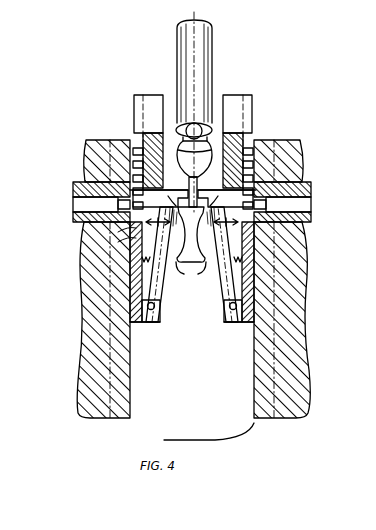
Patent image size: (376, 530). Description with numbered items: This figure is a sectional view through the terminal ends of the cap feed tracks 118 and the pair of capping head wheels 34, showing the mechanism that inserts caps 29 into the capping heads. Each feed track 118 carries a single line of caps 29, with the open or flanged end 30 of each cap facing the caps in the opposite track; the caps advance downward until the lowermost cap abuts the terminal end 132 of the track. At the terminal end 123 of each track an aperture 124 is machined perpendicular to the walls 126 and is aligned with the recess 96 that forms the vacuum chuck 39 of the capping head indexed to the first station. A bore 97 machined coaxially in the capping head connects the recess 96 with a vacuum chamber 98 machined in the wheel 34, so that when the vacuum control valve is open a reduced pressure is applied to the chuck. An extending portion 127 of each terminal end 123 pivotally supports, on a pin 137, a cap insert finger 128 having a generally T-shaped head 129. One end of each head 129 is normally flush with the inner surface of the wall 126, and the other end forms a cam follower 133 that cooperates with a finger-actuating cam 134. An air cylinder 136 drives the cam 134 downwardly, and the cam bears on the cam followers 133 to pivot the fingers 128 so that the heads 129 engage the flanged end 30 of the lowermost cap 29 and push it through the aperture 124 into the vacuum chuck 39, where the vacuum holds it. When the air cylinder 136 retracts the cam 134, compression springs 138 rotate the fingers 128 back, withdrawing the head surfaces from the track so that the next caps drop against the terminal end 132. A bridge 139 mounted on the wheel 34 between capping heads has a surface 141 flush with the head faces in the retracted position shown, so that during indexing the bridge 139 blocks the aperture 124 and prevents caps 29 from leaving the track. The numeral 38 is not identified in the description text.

The indexing wheel 34 is at (90, 139).
The vacuum chuck 39 is at (90, 180).
The vacuum chamber 98 is at (73, 204).
The bore 97 is at (266, 204).
The recess 96 is at (130, 214).
The terminal end of feed track 132 is at (253, 222).
The cap 29 is at (134, 146).
The feed track 118 is at (133, 106).
The terminal end 123 is at (166, 132).
The gripping device 38 is at (258, 90).
The flanged end 30 is at (193, 194).
The air cylinder 136 is at (213, 44).
The finger-actuating cam 134 is at (191, 137).
The cam follower 133 is at (191, 234).
The T-shaped head 129 is at (191, 267).
The cap insert finger 128 is at (221, 289).
The pin 137 is at (228, 323).
The extending portion 127 is at (128, 299).
The compression spring 138 is at (141, 259).
The aperture 124 is at (146, 224).
The wall 126 is at (144, 231).
The surface 141 is at (132, 393).
The bridge 139 is at (122, 418).